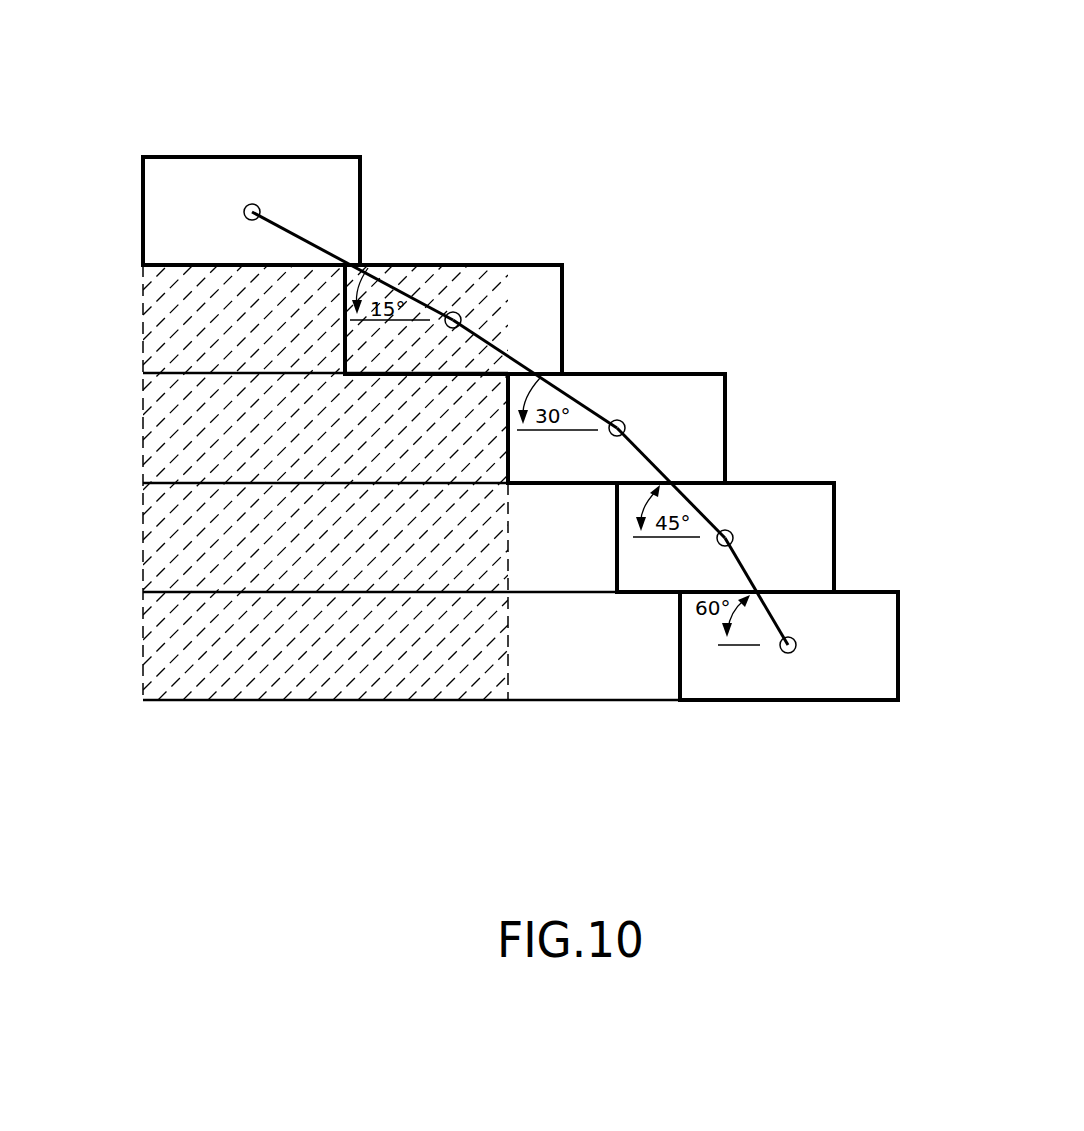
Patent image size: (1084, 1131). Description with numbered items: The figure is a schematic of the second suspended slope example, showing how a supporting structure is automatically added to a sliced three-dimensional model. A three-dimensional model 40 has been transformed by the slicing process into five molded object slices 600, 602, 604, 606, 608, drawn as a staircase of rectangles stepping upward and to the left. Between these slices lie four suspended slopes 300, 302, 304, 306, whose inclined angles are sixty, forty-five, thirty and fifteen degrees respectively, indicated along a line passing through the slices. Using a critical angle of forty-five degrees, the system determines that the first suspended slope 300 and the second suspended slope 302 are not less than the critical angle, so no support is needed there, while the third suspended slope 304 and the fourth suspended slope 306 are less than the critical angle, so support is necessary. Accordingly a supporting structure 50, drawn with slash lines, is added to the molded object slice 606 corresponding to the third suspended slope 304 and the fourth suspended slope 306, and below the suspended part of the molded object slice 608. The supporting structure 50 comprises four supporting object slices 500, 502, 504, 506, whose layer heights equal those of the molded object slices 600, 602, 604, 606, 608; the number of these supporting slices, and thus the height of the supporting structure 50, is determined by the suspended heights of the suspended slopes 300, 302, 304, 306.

The 3D model 40 is at (525, 28).
The supporting structure 50 is at (309, 714).
The supporting object slice 500 is at (180, 653).
The supporting object slice 502 is at (180, 533).
The supporting object slice 504 is at (180, 436).
The supporting object slice 506 is at (180, 316).
The molded object slice 600 is at (870, 608).
The molded object slice 602 is at (785, 513).
The molded object slice 604 is at (683, 390).
The molded object slice 606 is at (537, 290).
The molded object slice 608 is at (218, 173).
The first suspended slope 300 is at (772, 613).
The second suspended slope 302 is at (643, 453).
The third suspended slope 304 is at (500, 347).
The fourth suspended slope 306 is at (303, 237).